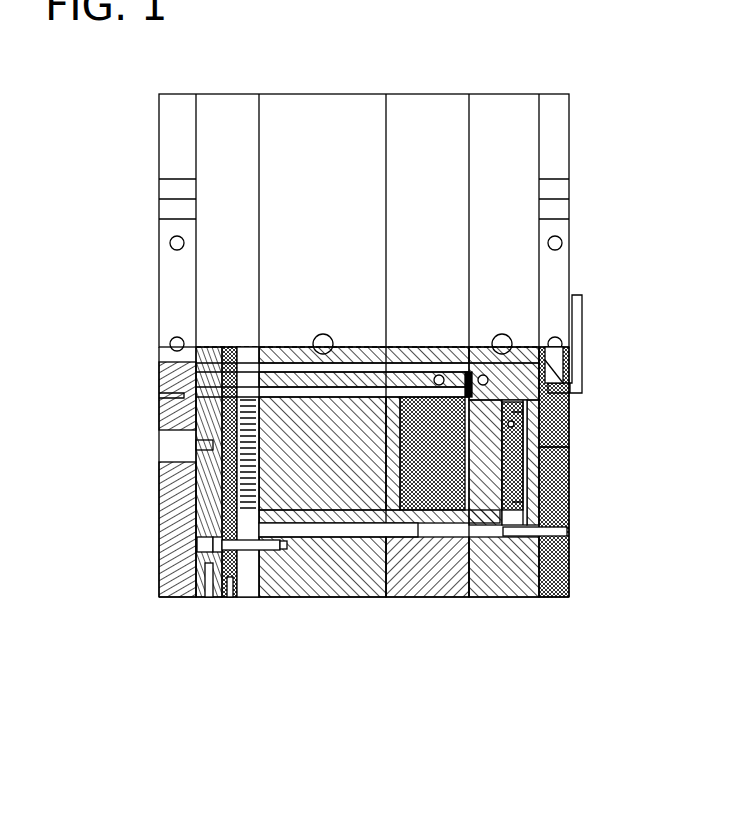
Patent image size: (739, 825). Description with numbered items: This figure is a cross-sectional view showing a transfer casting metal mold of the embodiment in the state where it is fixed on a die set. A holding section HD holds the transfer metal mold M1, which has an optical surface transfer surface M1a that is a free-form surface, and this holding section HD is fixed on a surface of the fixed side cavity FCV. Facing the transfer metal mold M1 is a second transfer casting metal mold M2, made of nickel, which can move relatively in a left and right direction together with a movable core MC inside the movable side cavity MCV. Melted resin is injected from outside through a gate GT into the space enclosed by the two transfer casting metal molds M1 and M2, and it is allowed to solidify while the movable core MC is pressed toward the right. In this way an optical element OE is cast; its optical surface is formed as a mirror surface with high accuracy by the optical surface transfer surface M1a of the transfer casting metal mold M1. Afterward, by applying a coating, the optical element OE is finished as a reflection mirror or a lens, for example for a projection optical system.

The transfer casting metal mold M2 is at (432, 410).
The gate GT is at (478, 347).
The optical surface transfer surface M1a is at (573, 434).
The transfer metal mold M1 is at (573, 458).
The holding section HD is at (538, 453).
The optical element OE is at (540, 497).
The movable core MC is at (322, 512).
The movable side cavity MCV is at (440, 545).
The fixed side cavity FCV is at (505, 545).